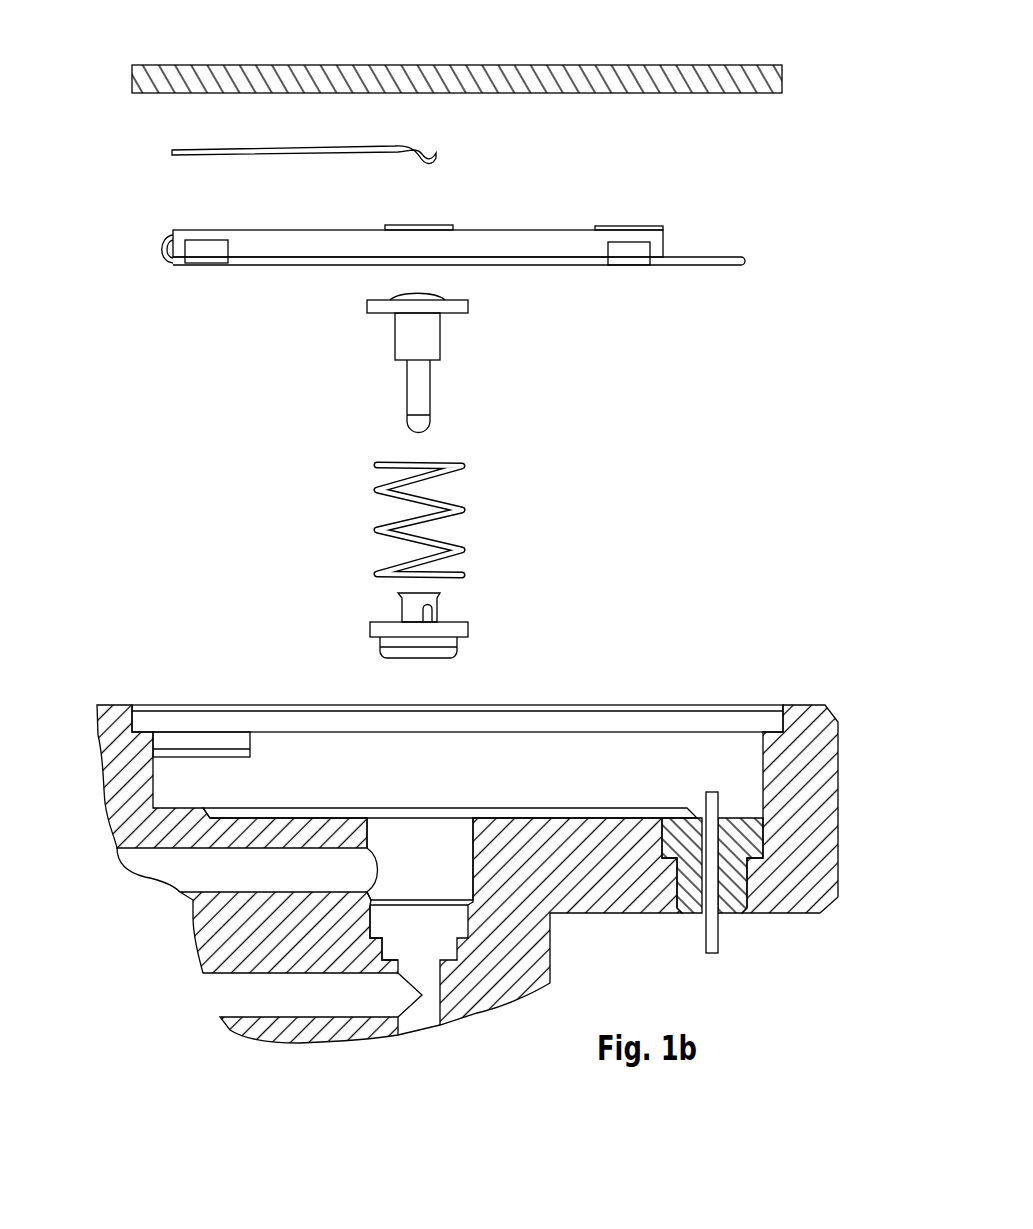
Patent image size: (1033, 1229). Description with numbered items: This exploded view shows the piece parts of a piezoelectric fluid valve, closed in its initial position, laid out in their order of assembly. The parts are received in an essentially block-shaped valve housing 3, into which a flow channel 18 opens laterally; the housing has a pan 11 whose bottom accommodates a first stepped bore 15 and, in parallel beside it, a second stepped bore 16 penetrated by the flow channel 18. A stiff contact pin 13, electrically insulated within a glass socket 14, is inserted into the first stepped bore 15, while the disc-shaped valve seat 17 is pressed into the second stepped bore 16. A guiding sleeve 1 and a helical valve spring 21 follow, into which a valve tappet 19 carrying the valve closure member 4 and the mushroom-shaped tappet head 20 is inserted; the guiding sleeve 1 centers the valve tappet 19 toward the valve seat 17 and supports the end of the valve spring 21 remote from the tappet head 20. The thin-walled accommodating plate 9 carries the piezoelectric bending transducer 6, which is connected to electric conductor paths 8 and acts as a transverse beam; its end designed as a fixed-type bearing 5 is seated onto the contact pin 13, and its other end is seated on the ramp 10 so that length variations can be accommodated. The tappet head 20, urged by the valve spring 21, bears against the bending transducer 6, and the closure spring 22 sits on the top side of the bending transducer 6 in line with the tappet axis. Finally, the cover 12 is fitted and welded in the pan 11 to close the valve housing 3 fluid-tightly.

The guiding sleeve 1 is at (407, 610).
The valve housing 3 is at (808, 773).
The valve closure member 4 is at (415, 427).
The fixed-type bearing 5 is at (643, 812).
The piezoelectric bending transducer 6 is at (548, 245).
The electric conductor paths 8 is at (676, 258).
The accommodating plate 9 is at (208, 258).
The ramp 10 is at (181, 808).
The pan 11 is at (578, 753).
The cover 12 is at (450, 78).
The contact pin 13 is at (718, 945).
The glass socket 14 is at (690, 887).
The first stepped bore 15 is at (752, 818).
The second stepped bore 16 is at (450, 868).
The valve seat 17 is at (400, 646).
The flow channel 18 is at (212, 983).
The valve tappet 19 is at (425, 392).
The tappet head 20 is at (468, 305).
The valve spring 21 is at (460, 510).
The closure spring 22 is at (258, 151).